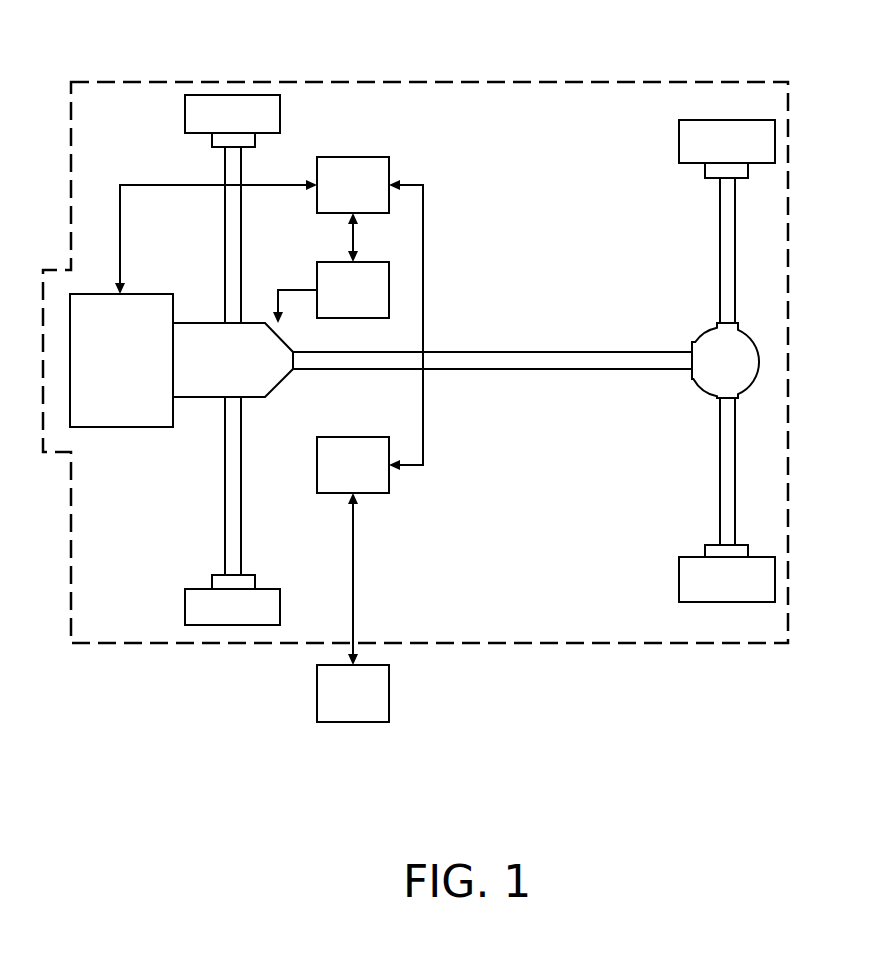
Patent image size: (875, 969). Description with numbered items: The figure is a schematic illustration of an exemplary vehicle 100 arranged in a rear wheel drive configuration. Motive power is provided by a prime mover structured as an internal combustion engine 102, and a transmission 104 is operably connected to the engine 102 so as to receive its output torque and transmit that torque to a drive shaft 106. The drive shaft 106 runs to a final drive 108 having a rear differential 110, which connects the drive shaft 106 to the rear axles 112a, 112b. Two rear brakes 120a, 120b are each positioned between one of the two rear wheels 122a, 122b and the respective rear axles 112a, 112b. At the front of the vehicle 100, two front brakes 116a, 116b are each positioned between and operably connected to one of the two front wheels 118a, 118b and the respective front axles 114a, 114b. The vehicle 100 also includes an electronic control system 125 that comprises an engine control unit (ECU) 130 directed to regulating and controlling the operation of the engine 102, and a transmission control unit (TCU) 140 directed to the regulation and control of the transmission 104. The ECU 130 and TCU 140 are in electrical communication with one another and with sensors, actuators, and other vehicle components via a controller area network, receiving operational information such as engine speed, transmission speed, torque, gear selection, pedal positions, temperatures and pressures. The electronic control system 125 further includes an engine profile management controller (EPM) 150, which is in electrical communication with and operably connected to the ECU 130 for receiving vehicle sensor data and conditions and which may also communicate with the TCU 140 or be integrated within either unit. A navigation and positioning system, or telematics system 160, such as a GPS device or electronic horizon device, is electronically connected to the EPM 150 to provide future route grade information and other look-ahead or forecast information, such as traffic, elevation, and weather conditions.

The vehicle 100 is at (790, 58).
The internal combustion engine 102 is at (143, 367).
The transmission 104 is at (255, 367).
The drive shaft 106 is at (498, 351).
The final drive 108 is at (758, 345).
The rear differential 110 is at (706, 338).
The rear axle 112a is at (720, 225).
The rear axle 112b is at (720, 489).
The front axle 114a is at (225, 225).
The front axle 114b is at (225, 489).
The front brake 116a is at (212, 138).
The front brake 116b is at (212, 577).
The front wheel 118a is at (185, 103).
The front wheel 118b is at (185, 603).
The rear brake 120a is at (705, 170).
The rear brake 120b is at (705, 546).
The rear wheel 122a is at (679, 140).
The rear wheel 122b is at (679, 578).
The electronic control system 125 is at (452, 534).
The engine control unit (ECU) 130 is at (317, 160).
The transmission control unit (TCU) 140 is at (317, 268).
The engine profile management controller (EPM) 150 is at (317, 443).
The navigation and positioning system (telematics system) 160 is at (317, 676).